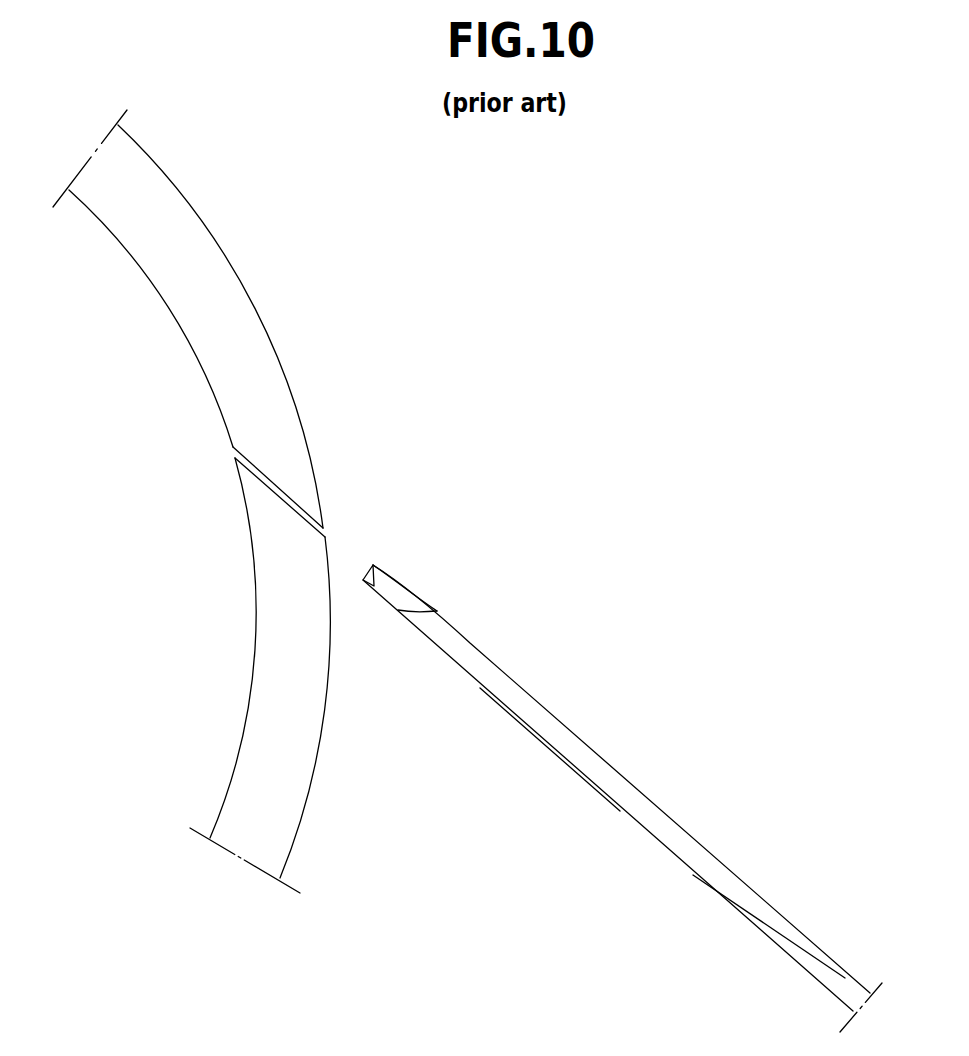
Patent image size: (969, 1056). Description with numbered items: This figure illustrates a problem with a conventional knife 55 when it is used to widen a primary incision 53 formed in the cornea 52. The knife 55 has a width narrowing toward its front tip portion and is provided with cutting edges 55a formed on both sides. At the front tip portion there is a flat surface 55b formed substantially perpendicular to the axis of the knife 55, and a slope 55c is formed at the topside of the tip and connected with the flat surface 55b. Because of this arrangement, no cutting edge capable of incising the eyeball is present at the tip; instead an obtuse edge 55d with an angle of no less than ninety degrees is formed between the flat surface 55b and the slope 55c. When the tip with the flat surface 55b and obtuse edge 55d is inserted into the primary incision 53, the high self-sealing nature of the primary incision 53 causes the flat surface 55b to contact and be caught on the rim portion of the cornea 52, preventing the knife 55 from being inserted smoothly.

The cornea 52 is at (280, 371).
The primary incision 53 is at (329, 534).
The knife 55 is at (560, 713).
The cutting edges 55a is at (480, 688).
The flat surface 55b is at (363, 580).
The slope 55c is at (378, 571).
The obtuse edge 55d is at (373, 565).